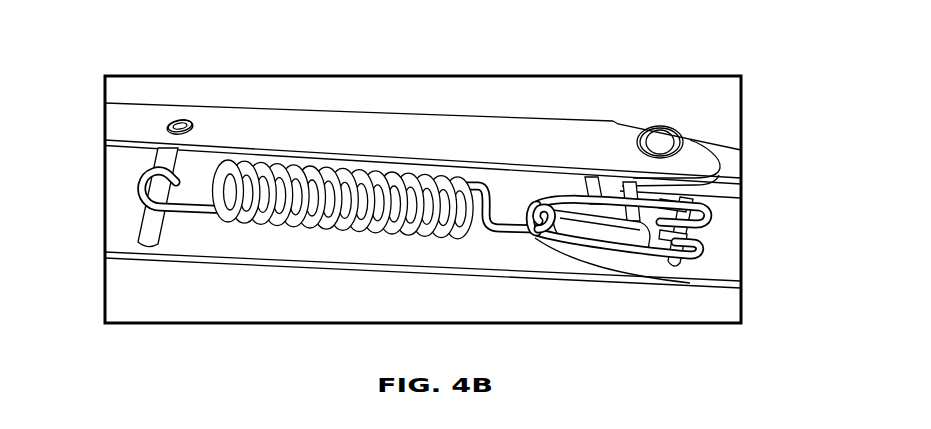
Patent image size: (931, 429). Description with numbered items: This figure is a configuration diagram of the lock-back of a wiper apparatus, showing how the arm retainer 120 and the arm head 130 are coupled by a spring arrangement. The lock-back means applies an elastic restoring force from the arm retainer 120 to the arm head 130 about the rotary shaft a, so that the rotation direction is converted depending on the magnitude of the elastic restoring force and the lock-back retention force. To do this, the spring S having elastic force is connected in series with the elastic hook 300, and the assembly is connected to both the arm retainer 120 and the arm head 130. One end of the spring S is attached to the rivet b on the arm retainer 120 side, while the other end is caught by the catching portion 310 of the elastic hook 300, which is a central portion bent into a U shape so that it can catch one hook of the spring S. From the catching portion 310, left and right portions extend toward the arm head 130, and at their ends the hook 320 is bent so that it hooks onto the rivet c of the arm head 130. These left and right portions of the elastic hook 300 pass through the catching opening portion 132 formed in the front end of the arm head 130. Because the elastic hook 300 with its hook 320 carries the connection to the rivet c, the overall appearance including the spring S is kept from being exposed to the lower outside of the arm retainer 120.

The arm retainer 120 is at (272, 127).
The spring S is at (328, 177).
The catching portion 310 is at (528, 200).
The catching opening portion 132 is at (583, 195).
The elastic hook 300 is at (615, 198).
The rotary shaft a is at (657, 142).
The arm head 130 is at (723, 153).
The hook 320 is at (710, 210).
The rivet c is at (695, 236).
The rivet b is at (150, 220).